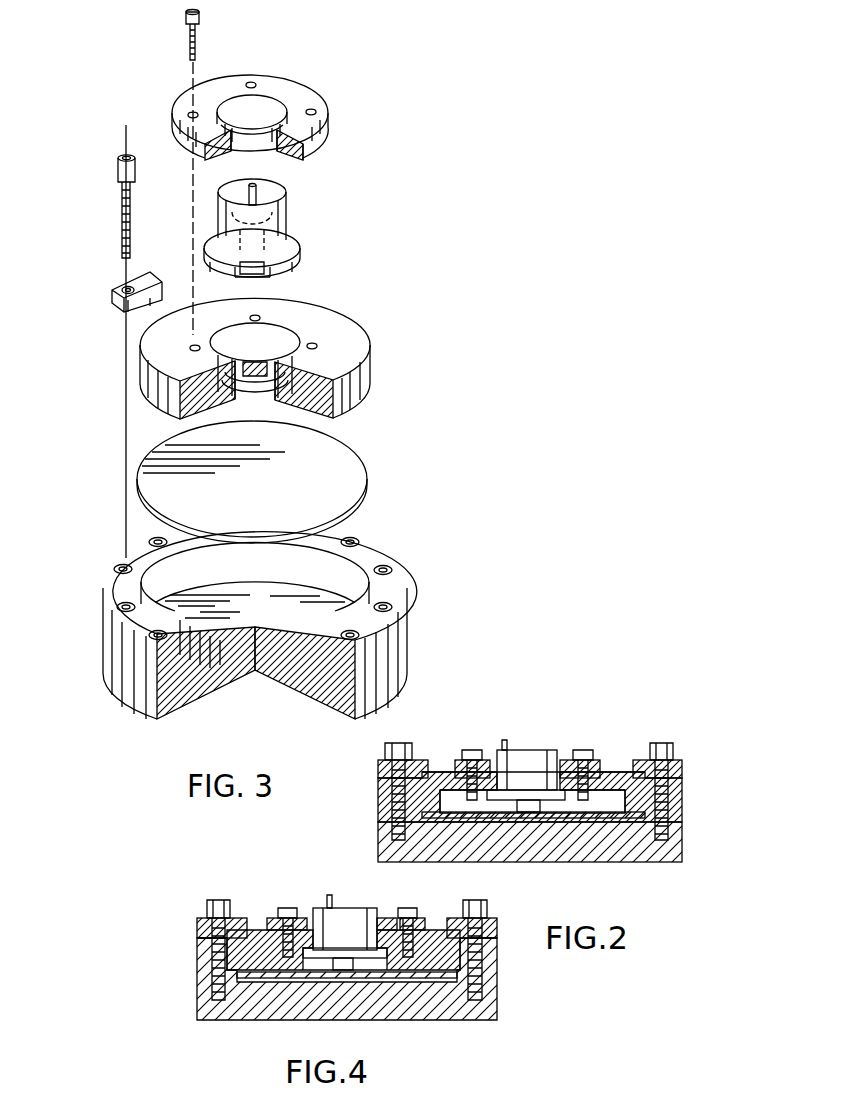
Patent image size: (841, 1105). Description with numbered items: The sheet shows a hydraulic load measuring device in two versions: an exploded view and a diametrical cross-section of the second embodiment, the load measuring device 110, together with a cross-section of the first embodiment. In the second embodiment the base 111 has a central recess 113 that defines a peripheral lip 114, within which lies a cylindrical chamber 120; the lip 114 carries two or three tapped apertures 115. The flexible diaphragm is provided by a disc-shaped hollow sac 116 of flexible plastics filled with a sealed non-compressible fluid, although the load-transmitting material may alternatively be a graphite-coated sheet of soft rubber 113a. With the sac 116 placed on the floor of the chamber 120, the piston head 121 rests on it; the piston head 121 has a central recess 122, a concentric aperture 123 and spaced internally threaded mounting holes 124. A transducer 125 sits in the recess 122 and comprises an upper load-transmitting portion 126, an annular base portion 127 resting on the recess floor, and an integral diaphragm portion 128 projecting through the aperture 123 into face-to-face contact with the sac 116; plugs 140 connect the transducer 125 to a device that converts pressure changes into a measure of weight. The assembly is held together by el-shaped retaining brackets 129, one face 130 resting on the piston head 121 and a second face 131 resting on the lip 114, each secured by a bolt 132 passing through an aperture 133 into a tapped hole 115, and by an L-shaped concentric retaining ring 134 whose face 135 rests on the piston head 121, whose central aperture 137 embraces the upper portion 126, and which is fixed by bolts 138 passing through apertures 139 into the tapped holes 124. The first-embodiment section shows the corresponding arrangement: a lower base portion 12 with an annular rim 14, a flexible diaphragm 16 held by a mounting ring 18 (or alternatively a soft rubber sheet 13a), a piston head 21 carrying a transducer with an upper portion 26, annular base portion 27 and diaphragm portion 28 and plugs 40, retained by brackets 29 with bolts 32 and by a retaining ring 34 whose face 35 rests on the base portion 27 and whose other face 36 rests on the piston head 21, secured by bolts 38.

In FIG. 3, the load measuring device 110 is at (402, 528).
In FIG. 3, the base 111 is at (262, 596).
In FIG. 4, the base 111 is at (485, 1010).
In FIG. 3, the central recess 113 is at (303, 600).
In FIG. 4, the sheet of soft rubber 113a is at (432, 980).
In FIG. 3, the peripheral lip 114 is at (137, 625).
In FIG. 3, the tapped apertures 115 is at (120, 567).
In FIG. 3, the disc-shaped hollow sac 116 is at (343, 470).
In FIG. 3, the cylindrical chamber 120 is at (282, 616).
In FIG. 3, the piston head 121 is at (253, 356).
In FIG. 4, the piston head 121 is at (443, 950).
In FIG. 3, the central recess 122 is at (270, 345).
In FIG. 3, the concentric aperture 123 is at (190, 350).
In FIG. 3, the internally threaded mounting holes 124 is at (318, 347).
In FIG. 3, the transducer 125 is at (290, 229).
In FIG. 3, the upper load-transmitting portion 126 is at (285, 226).
In FIG. 4, the upper load-transmitting portion 126 is at (318, 955).
In FIG. 3, the annular base portion 127 is at (290, 255).
In FIG. 4, the annular base portion 127 is at (370, 958).
In FIG. 3, the integral diaphragm portion 128 is at (262, 272).
In FIG. 4, the integral diaphragm portion 128 is at (338, 968).
In FIG. 3, the el-shaped retaining brackets 129 is at (119, 292).
In FIG. 4, the el-shaped retaining brackets 129 is at (206, 928).
In FIG. 3, the face of retaining bracket 130 is at (166, 300).
In FIG. 3, the second face of retaining bracket 131 is at (126, 312).
In FIG. 3, the bolt 132 is at (120, 198).
In FIG. 4, the bolt 132 is at (197, 965).
In FIG. 3, the aperture 133 is at (122, 286).
In FIG. 3, the L-shaped concentric retaining ring 134 is at (252, 132).
In FIG. 4, the L-shaped concentric retaining ring 134 is at (445, 922).
In FIG. 3, the face of retaining ring 135 is at (303, 152).
In FIG. 3, the central aperture 137 is at (270, 118).
In FIG. 3, the bolts 138 is at (198, 36).
In FIG. 4, the bolts 138 is at (408, 912).
In FIG. 3, the apertures 139 is at (193, 113).
In FIG. 3, the plugs 140 is at (258, 195).
In FIG. 4, the plugs 140 is at (330, 895).
In FIG. 3, the face of retaining ring 35 is at (230, 152).
In FIG. 3, the other face of retaining ring 36 is at (208, 152).
In FIG. 2, the lower base portion 12 is at (680, 848).
In FIG. 2, the sheet of soft rubber 13a is at (482, 820).
In FIG. 2, the annular rim 14 is at (498, 820).
In FIG. 2, the flexible diaphragm 16 is at (528, 818).
In FIG. 2, the mounting ring 18 is at (554, 803).
In FIG. 2, the piston head 21 is at (622, 782).
In FIG. 2, the upper load-transmitting portion 26 is at (566, 797).
In FIG. 2, the annular base portion 27 is at (558, 800).
In FIG. 2, the integral diaphragm portion 28 is at (530, 805).
In FIG. 2, the el-shaped retaining brackets 29 is at (678, 770).
In FIG. 2, the bolt 32 is at (555, 777).
In FIG. 2, the el-shaped concentric retaining ring 34 is at (568, 760).
In FIG. 2, the bolts 38 is at (588, 760).
In FIG. 2, the plugs 40 is at (500, 742).